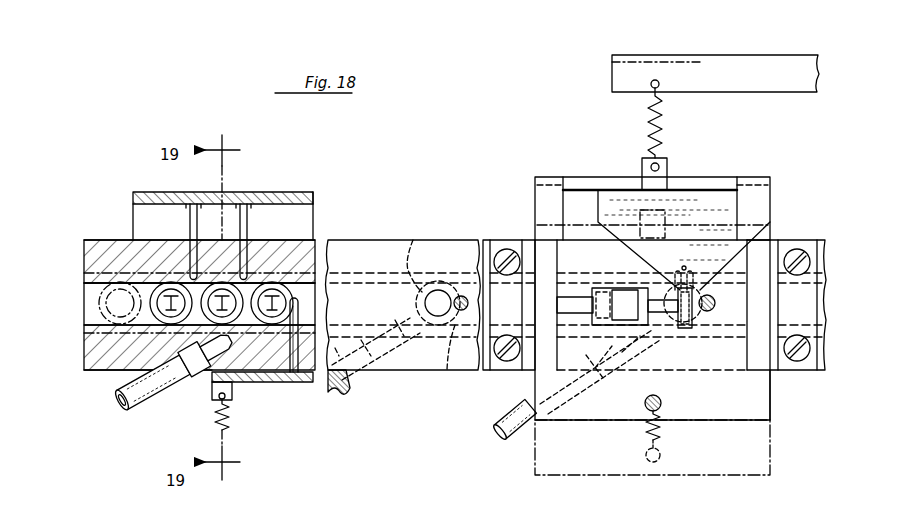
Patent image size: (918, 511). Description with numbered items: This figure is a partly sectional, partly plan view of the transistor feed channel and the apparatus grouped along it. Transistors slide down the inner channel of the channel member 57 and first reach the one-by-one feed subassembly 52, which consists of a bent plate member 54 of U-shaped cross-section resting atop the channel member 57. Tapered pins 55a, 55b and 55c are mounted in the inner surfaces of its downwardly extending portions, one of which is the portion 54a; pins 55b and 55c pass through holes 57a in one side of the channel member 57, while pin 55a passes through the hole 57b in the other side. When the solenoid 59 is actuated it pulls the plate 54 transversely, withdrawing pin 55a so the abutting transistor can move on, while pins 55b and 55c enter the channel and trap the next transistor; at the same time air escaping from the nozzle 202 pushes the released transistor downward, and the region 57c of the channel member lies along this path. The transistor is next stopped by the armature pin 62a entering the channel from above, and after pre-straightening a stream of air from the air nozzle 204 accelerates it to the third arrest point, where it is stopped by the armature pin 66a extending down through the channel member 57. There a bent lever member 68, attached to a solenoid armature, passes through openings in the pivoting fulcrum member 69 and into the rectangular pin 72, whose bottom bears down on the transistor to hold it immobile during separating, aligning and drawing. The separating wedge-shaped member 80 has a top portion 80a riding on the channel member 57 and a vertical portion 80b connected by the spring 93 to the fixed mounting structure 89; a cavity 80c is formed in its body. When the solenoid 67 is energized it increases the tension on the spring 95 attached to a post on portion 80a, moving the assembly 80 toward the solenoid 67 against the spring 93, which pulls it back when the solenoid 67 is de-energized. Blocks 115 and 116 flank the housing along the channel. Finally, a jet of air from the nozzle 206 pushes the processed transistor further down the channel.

The one-by-one feed subassembly 52 is at (316, 198).
The bent plate member 54 is at (301, 192).
The downwardly extending portion 54a is at (266, 382).
The tapered pin 55a is at (299, 382).
The tapered pin 55b is at (190, 224).
The tapered pin 55c is at (248, 206).
The channel member 57 is at (98, 258).
The holes 57a is at (140, 248).
The hole 57b is at (257, 382).
The block section 57c is at (391, 280).
The solenoid 59 is at (174, 419).
The armature pin 62a is at (462, 296).
The armature pin 66a is at (712, 312).
The solenoid 67 is at (652, 447).
The bent lever member 68 is at (578, 296).
The pivoting fulcrum member 69 is at (627, 296).
The rectangular pin 72 is at (688, 328).
The separating wedge-shaped member 80 is at (550, 178).
The top portion 80a is at (768, 397).
The vertical portion 80b is at (708, 186).
The housing cavity 80c is at (624, 205).
The fixed mounting structure 89 is at (745, 80).
The spring 93 is at (662, 122).
The spring 95 is at (650, 426).
The block 115 is at (509, 372).
The block 116 is at (762, 258).
The nozzle 202 is at (216, 347).
The air nozzle 204 is at (408, 370).
The nozzle 206 is at (646, 393).